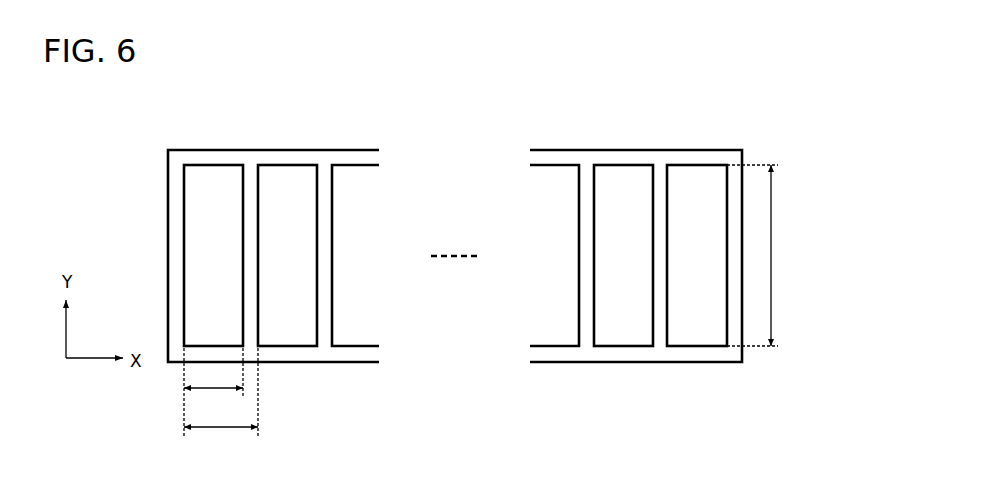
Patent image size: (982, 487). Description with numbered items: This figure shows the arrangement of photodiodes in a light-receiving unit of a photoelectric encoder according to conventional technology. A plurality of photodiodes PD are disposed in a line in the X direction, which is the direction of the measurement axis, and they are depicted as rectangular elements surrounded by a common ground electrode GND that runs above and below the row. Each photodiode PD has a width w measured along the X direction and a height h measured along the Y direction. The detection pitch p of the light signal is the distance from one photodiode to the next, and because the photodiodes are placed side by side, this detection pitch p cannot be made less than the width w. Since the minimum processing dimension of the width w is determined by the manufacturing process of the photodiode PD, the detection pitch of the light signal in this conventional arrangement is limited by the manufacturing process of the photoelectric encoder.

The photodiode PD is at (215, 180).
The ground electrode GND is at (698, 354).
The width of the photodiode w is at (213, 392).
The detection pitch p is at (221, 399).
The height of the photodiode h is at (756, 255).